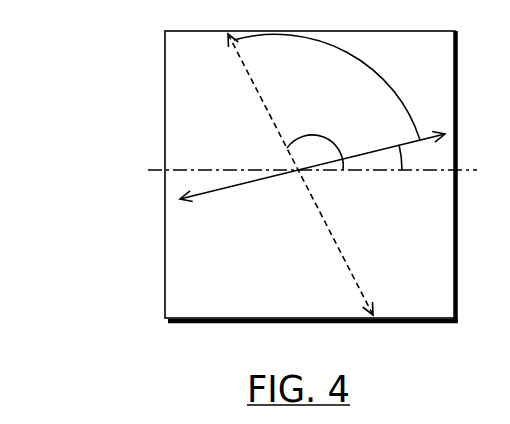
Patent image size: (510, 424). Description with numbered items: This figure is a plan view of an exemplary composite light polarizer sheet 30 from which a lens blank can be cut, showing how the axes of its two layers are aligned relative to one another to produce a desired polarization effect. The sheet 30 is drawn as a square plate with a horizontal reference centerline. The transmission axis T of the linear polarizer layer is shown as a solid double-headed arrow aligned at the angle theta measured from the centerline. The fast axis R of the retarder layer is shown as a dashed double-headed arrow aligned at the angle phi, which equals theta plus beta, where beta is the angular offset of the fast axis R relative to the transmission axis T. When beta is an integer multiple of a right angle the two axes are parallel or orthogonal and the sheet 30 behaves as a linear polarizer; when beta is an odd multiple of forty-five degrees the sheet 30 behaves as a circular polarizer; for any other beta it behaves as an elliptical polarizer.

The sheet 30 is at (145, 75).
The transmission axis T is at (218, 191).
The fast axis R is at (357, 285).